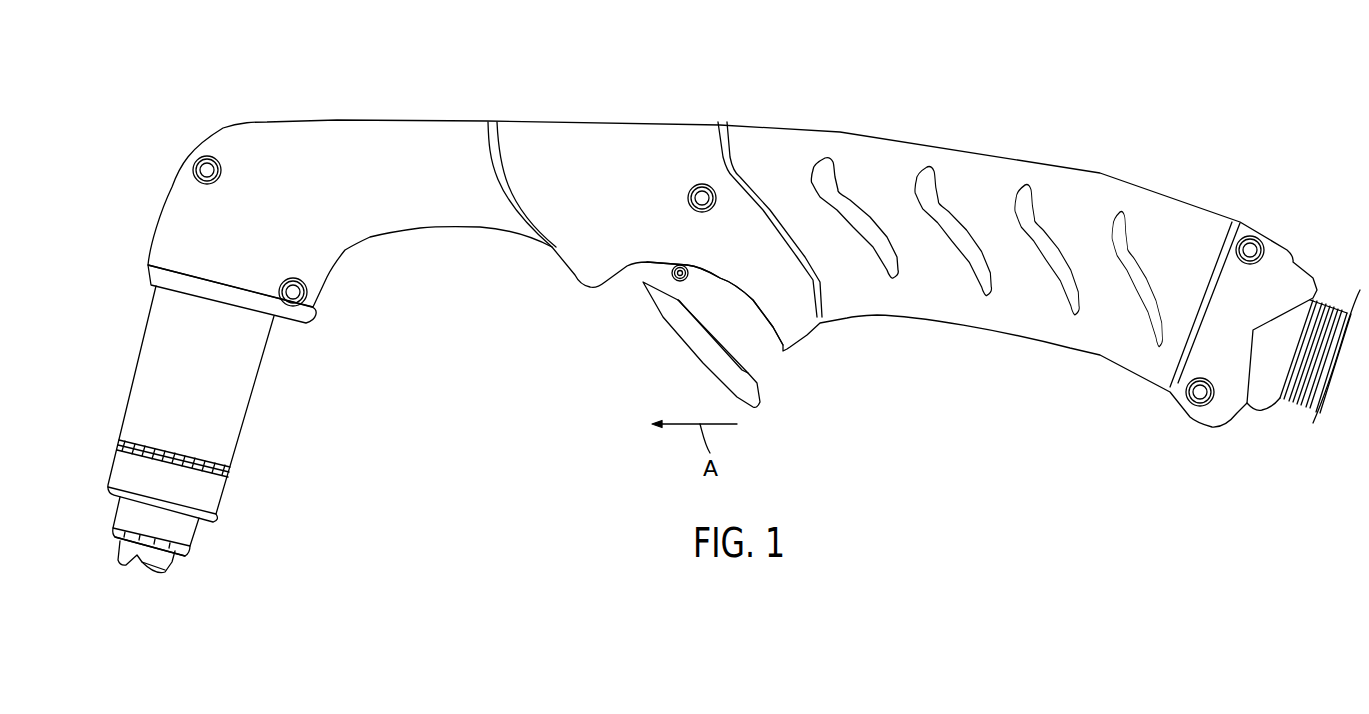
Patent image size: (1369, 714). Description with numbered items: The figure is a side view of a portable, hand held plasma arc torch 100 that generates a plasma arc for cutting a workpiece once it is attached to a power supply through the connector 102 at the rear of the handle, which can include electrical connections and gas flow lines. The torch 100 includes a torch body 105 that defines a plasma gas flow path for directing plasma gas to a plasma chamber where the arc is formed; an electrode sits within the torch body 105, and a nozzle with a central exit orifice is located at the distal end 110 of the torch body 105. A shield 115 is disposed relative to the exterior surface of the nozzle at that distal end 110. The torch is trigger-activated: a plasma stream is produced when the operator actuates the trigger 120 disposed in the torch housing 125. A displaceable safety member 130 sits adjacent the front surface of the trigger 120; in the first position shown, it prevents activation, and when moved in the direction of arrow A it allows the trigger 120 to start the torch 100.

The plasma arc torch 100 is at (280, 90).
The connector 102 is at (1310, 397).
The torch body 105 is at (232, 395).
The distal end 110 is at (230, 542).
The shield 115 is at (158, 563).
The trigger 120 is at (758, 338).
The torch housing 125 is at (825, 141).
The safety member 130 is at (692, 343).